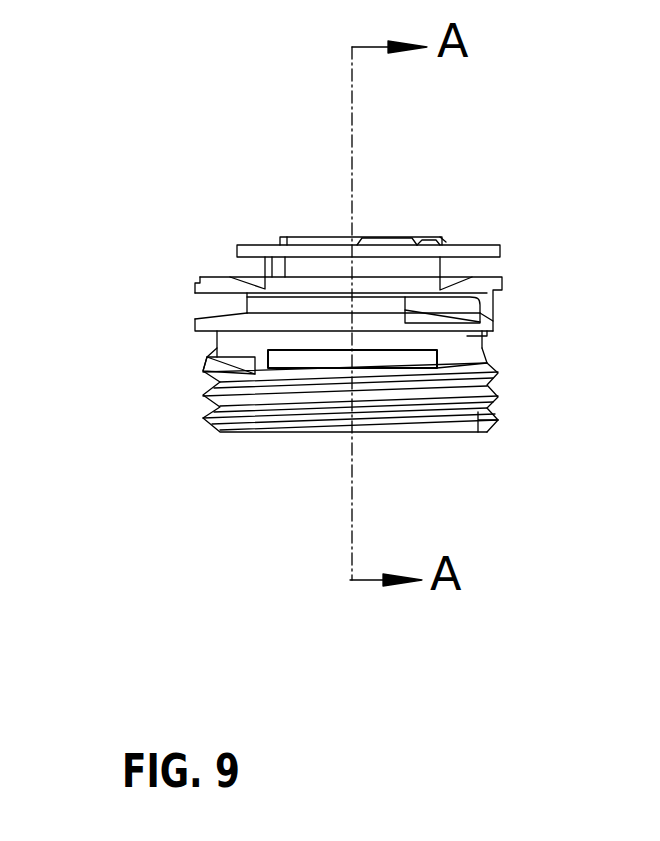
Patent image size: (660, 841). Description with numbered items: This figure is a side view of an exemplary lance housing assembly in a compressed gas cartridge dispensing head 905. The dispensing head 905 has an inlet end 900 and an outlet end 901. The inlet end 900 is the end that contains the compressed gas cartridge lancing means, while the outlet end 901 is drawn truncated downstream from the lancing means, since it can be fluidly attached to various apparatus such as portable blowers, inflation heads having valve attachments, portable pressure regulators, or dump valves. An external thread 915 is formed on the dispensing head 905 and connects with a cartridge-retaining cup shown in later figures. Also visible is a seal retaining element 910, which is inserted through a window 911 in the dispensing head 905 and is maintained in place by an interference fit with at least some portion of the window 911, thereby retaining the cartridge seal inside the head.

The inlet end 900 is at (252, 445).
The outlet end 901 is at (433, 220).
The compressed gas cartridge dispensing head 905 is at (485, 292).
The seal retaining element 910 is at (423, 358).
The window 911 is at (215, 346).
The external thread 915 is at (502, 412).